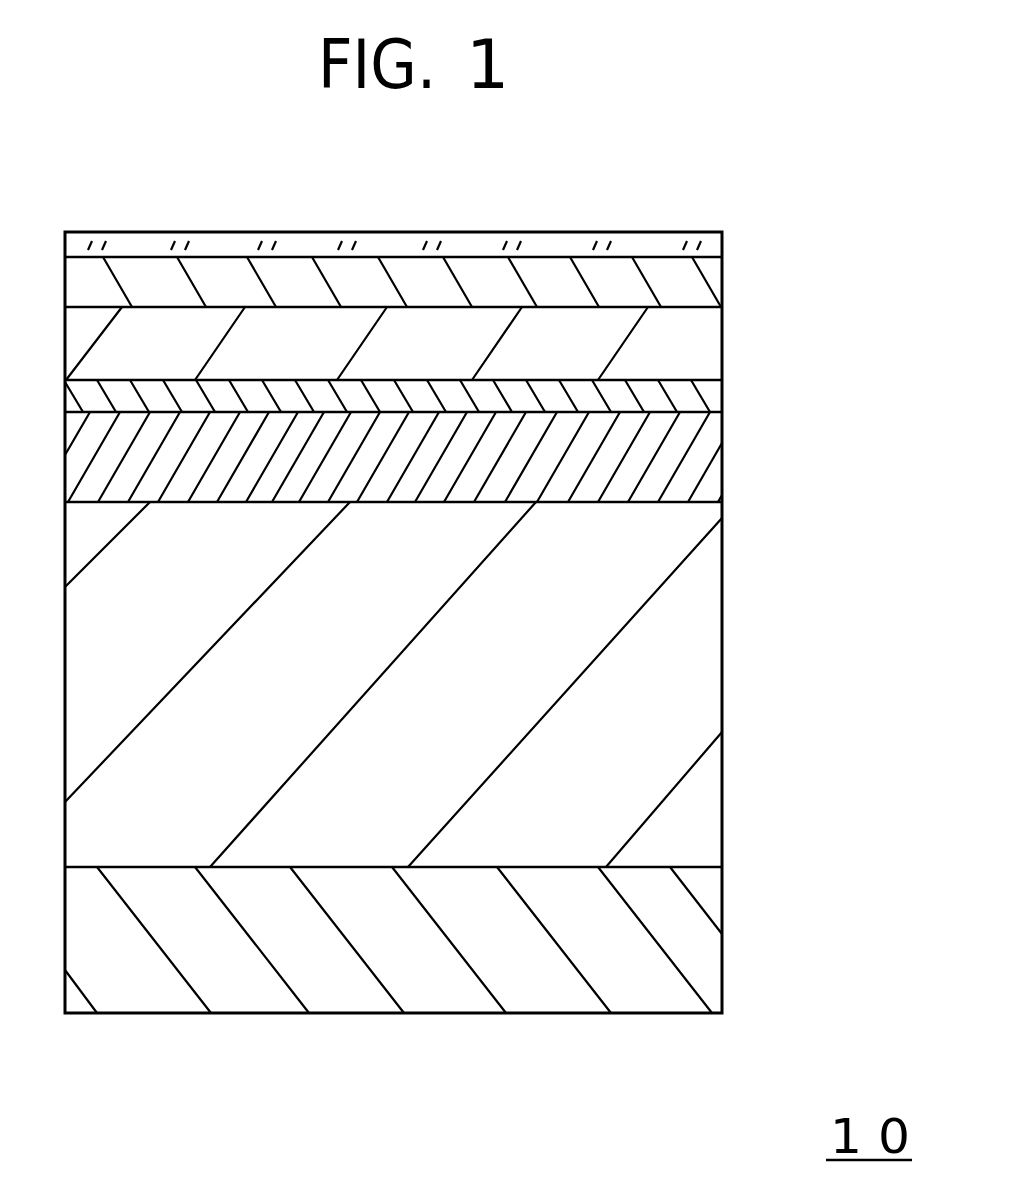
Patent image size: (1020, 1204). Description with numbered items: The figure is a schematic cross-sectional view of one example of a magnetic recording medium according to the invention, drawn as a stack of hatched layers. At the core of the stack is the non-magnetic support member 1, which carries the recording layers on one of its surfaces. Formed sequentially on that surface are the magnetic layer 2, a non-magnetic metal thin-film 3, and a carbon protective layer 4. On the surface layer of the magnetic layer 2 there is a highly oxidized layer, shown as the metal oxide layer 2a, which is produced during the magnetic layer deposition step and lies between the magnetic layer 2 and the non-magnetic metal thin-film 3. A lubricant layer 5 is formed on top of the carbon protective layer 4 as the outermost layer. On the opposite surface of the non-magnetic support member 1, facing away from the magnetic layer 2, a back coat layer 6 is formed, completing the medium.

The non-magnetic support member 1 is at (680, 695).
The magnetic layer 2 is at (688, 477).
The metal oxide layer 2a is at (698, 397).
The non-magnetic metal thin-film 3 is at (658, 352).
The carbon protective layer 4 is at (687, 288).
The lubricant layer 5 is at (722, 238).
The back coat layer 6 is at (698, 942).